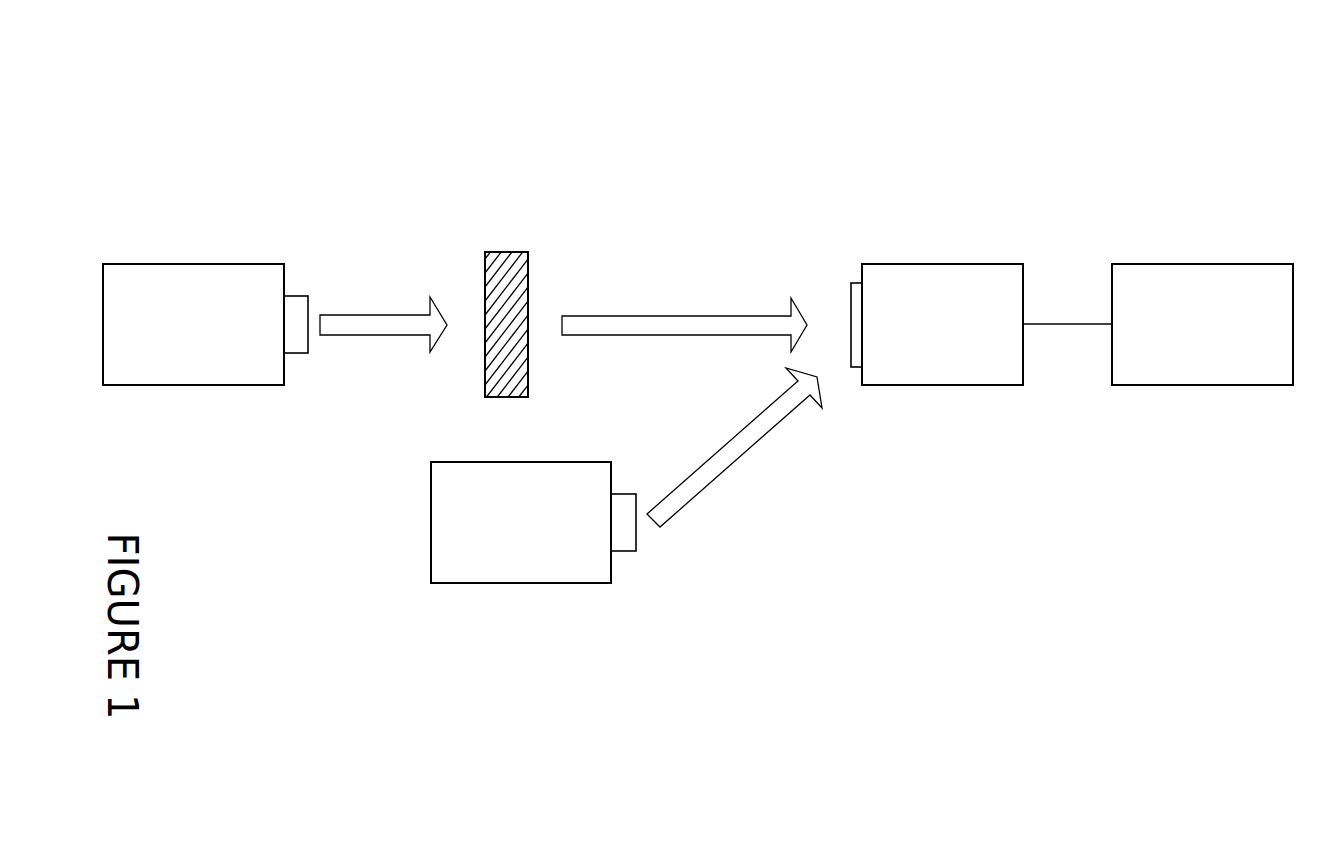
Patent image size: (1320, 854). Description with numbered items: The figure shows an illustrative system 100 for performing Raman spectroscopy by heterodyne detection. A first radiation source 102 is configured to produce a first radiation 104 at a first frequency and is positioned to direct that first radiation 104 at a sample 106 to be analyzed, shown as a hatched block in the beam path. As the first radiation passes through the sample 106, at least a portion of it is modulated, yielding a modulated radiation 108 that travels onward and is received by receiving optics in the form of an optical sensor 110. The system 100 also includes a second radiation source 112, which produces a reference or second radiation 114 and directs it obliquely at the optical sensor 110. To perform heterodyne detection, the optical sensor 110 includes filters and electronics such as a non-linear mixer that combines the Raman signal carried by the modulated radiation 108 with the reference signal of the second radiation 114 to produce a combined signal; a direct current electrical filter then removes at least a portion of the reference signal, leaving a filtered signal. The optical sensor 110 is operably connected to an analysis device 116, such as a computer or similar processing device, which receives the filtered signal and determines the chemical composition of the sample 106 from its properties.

The system 100 is at (122, 77).
The first radiation source 102 is at (197, 310).
The first radiation 104 is at (383, 320).
The sample 106 is at (506, 310).
The modulated radiation 108 is at (684, 320).
The optical sensor 110 is at (981, 309).
The second radiation source 112 is at (533, 507).
The second radiation 114 is at (734, 447).
The analysis device 116 is at (1202, 309).